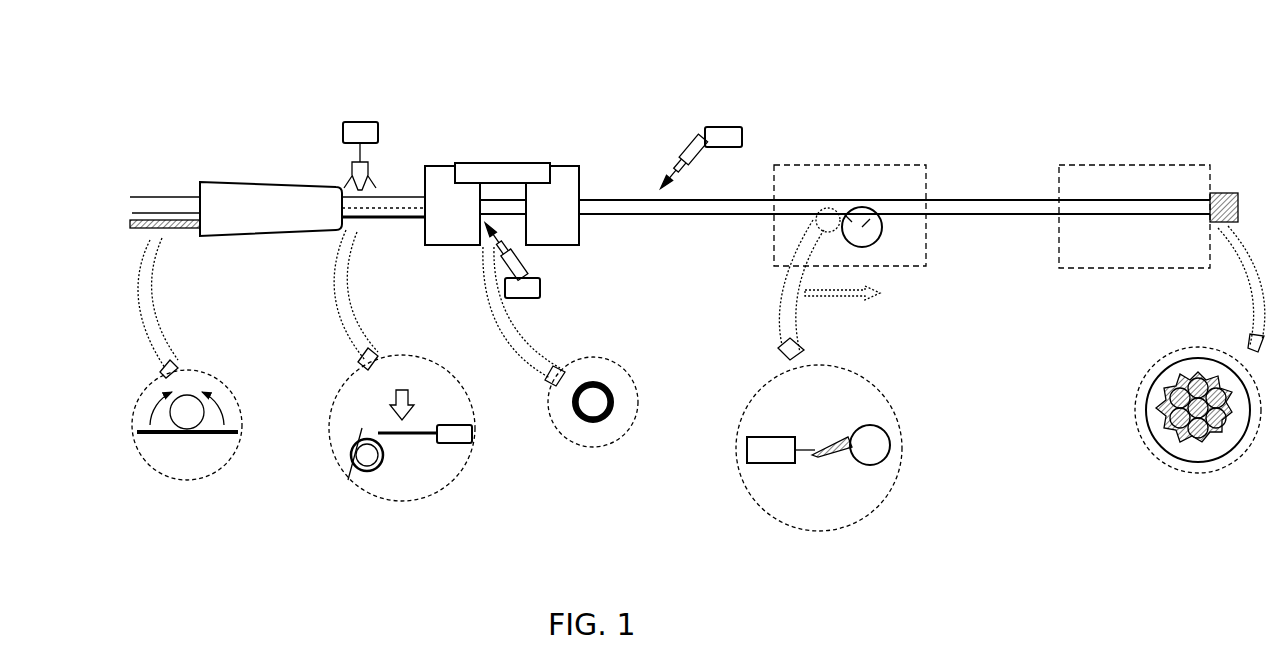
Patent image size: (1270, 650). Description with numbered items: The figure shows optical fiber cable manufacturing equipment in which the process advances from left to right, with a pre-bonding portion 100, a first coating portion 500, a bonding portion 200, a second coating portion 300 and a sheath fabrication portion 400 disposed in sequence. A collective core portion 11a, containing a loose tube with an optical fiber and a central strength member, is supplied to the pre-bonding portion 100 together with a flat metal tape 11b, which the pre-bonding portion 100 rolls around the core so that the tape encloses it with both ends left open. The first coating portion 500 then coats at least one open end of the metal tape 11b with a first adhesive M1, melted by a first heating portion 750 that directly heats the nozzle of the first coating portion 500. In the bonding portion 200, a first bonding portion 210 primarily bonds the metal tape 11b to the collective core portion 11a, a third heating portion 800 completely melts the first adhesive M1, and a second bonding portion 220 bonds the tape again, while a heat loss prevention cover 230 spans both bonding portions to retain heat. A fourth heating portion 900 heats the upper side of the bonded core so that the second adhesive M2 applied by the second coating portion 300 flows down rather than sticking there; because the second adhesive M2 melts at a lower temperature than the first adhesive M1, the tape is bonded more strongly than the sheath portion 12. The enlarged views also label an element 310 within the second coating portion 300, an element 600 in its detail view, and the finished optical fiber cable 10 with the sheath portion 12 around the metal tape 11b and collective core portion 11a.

The cable 10 is at (1140, 382).
The collective core portion 11a is at (137, 195).
The metal tape 11b is at (150, 232).
The sheath portion 12 is at (1150, 432).
The pre-bonding portion 100 is at (254, 178).
The bonding portion 200 is at (495, 145).
The first bonding portion 210 is at (441, 164).
The second bonding portion 220 is at (562, 164).
The heat loss prevention cover 230 is at (503, 162).
The second coating portion 300 is at (864, 162).
The bonding roller 310 is at (883, 229).
The sheath fabrication portion 400 is at (1130, 162).
The first coating portion 500 is at (462, 446).
The heating member 600 is at (828, 455).
The first heating portion 750 is at (356, 120).
The third heating portion 800 is at (545, 290).
The fourth heating portion 900 is at (723, 125).
The first adhesive M1 is at (372, 437).
The second adhesive M2 is at (848, 436).